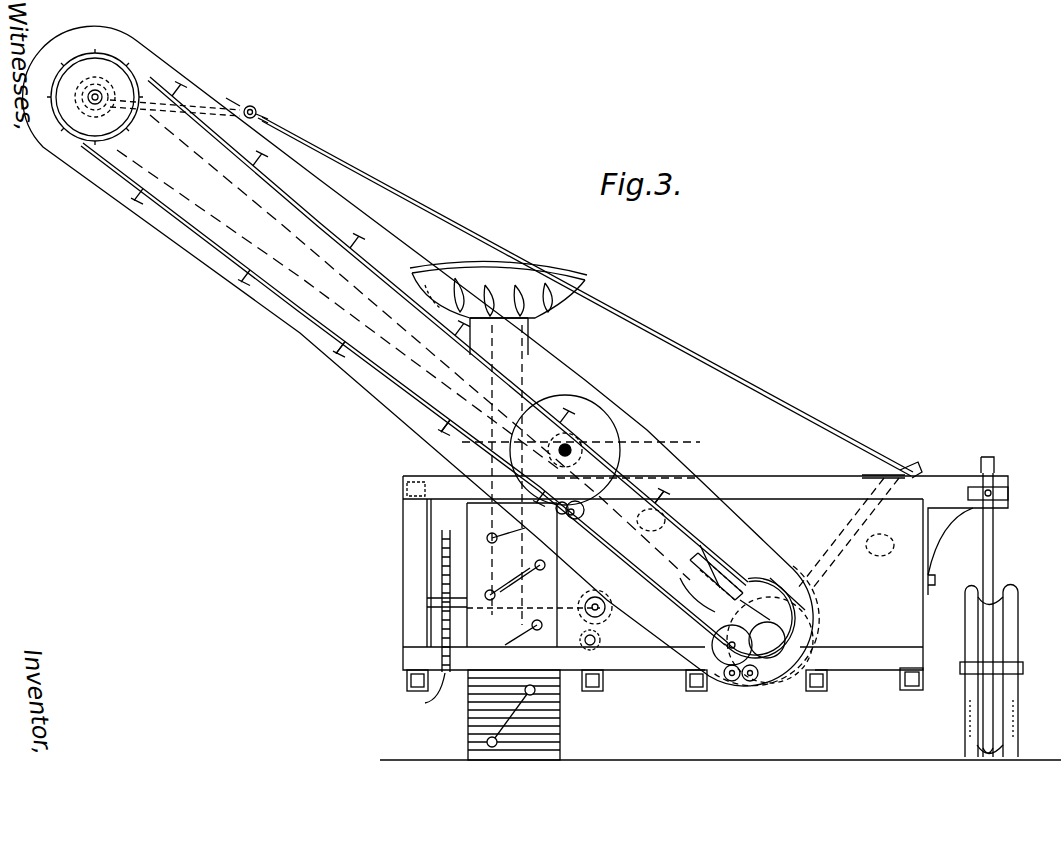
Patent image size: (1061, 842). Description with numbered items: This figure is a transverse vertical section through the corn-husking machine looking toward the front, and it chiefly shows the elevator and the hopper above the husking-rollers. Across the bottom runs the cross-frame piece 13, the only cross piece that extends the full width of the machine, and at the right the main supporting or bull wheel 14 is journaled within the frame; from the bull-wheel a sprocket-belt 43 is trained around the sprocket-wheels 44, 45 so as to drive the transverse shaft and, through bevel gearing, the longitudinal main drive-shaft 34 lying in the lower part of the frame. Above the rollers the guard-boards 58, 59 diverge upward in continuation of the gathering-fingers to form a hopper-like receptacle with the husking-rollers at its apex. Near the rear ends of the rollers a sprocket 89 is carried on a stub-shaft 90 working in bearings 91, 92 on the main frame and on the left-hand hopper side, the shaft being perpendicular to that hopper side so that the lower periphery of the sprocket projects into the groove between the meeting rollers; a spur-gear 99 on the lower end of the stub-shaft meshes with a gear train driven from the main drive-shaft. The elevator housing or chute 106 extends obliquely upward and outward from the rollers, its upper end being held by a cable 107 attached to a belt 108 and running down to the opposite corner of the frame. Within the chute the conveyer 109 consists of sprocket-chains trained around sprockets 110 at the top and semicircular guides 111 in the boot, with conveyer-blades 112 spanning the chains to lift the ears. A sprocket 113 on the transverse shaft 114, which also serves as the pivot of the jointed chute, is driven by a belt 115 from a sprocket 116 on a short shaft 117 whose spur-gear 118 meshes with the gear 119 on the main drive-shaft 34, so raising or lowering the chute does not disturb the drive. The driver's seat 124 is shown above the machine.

The cross-frame piece 13 is at (914, 604).
The main supporting or bull wheel 14 is at (533, 621).
The main drive-shaft 34 is at (586, 636).
The sprocket-belt 43 is at (441, 615).
The sprocket-wheel 44 is at (441, 535).
The sprocket-wheel 45 is at (422, 700).
The guard-board 58 is at (651, 520).
The guard-board 59 is at (880, 545).
The sprocket 89 is at (760, 560).
The stub-shaft 90 is at (710, 573).
The bearing 91 is at (680, 650).
The bearing 92 is at (822, 596).
The spur-gear 99 is at (665, 640).
The elevator housing or chute 106 is at (318, 348).
The cable 107 is at (462, 232).
The belt 108 is at (240, 105).
The conveyer 109 is at (262, 300).
The sprockets 110 is at (52, 138).
The semicircular guides 111 is at (800, 560).
The conveyer-blades 112 is at (355, 370).
The sprocket 113 is at (600, 425).
The shaft 114 is at (575, 452).
The belt 115 is at (560, 556).
The sprocket 116 is at (570, 610).
The short shaft 117 is at (506, 539).
The spur-gear 118 is at (572, 610).
The gear 119 is at (596, 648).
The driver's seat 124 is at (588, 275).